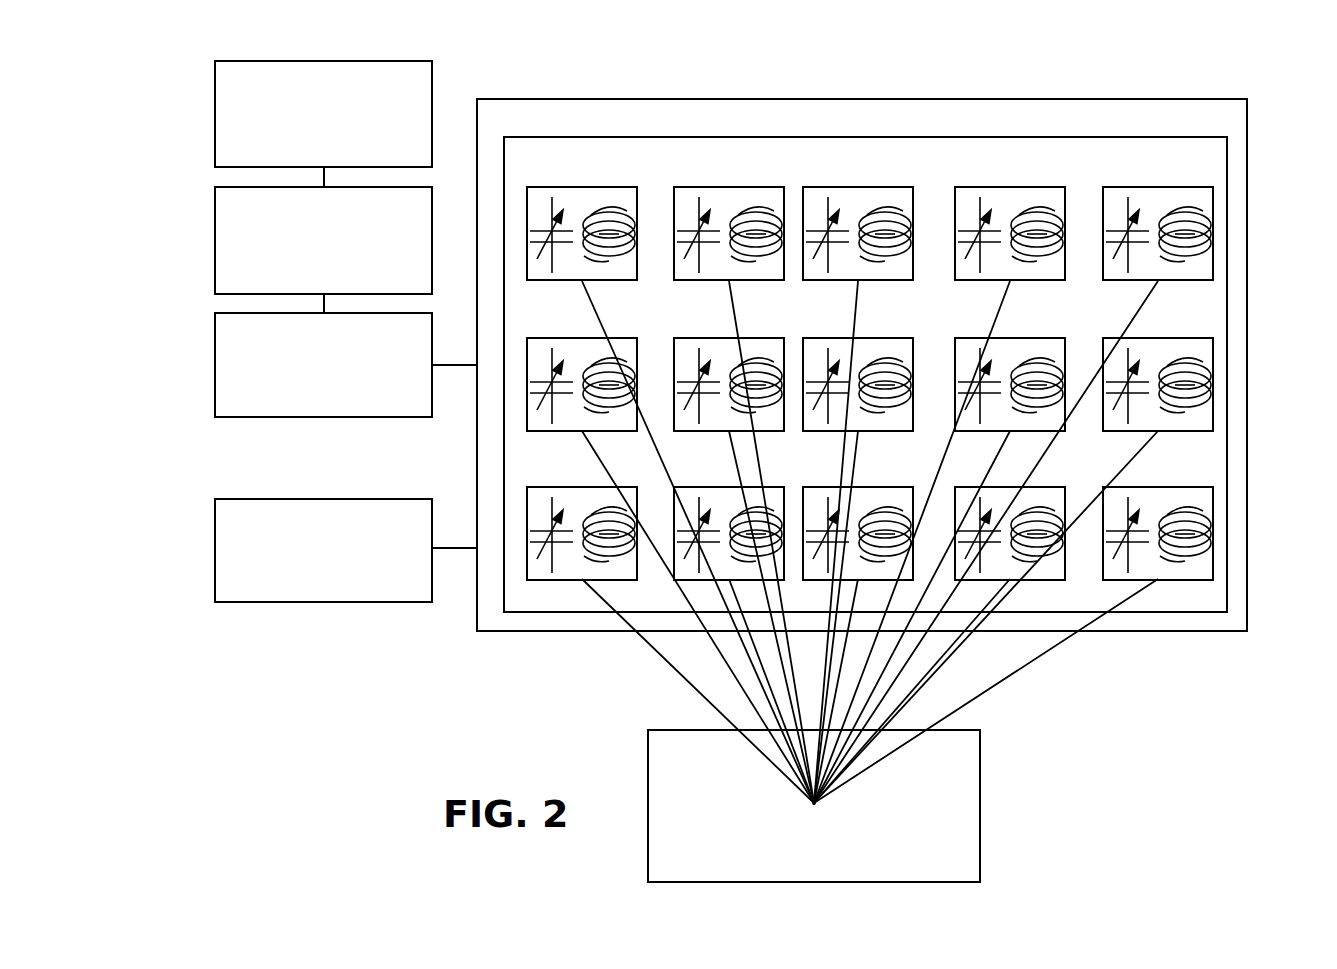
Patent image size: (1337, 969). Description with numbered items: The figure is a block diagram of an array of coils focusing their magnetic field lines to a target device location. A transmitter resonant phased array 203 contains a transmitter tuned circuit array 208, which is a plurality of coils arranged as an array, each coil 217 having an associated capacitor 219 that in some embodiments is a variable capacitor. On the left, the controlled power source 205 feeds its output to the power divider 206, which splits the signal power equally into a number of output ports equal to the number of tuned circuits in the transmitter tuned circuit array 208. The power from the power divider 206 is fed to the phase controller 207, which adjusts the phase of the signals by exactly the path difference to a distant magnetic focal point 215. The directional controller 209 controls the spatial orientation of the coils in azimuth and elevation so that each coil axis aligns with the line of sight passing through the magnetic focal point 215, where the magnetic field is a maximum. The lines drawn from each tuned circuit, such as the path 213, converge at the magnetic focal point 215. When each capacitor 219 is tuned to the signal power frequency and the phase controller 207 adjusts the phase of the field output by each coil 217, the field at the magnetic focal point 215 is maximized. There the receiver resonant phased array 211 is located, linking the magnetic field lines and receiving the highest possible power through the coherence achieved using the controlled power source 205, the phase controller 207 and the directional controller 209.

The transmitter resonant phased array 203 is at (898, 344).
The controlled power source 205 is at (323, 114).
The power divider 206 is at (323, 240).
The phase controller 207 is at (323, 365).
The transmitter tuned circuit array 208 is at (912, 334).
The directional controller 209 is at (323, 550).
The receiver resonant phased array 211 is at (814, 806).
The transmitted power beam path 213 is at (880, 762).
The magnetic focal point 215 is at (812, 803).
The coil 217 is at (1211, 232).
The capacitor 219 is at (1128, 198).